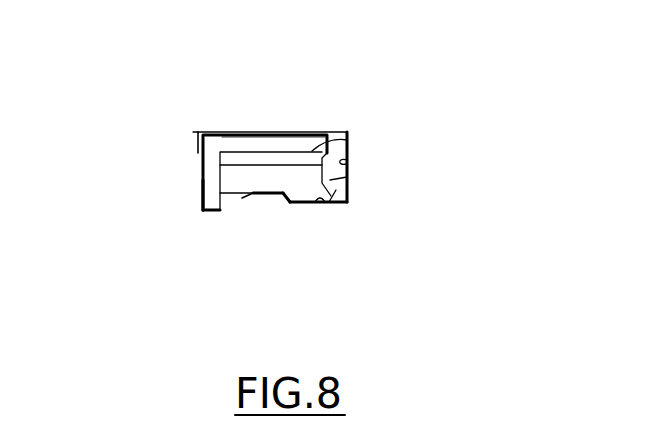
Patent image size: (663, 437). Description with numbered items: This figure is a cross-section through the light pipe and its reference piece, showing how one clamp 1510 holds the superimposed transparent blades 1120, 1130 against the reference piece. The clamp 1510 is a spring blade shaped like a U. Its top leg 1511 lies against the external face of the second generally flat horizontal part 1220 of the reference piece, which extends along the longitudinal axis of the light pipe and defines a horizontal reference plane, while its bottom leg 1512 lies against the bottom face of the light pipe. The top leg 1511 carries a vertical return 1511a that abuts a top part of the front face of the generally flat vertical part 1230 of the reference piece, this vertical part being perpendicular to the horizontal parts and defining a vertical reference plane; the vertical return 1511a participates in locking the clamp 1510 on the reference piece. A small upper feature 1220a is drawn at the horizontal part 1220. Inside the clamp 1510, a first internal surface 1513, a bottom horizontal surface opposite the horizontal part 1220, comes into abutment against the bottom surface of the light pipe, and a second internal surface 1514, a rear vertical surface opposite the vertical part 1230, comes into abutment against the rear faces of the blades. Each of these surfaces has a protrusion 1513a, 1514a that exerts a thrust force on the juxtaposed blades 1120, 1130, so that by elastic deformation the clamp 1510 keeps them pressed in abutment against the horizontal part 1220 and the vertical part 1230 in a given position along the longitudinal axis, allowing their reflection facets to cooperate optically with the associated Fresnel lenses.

The transparent blade 1120 is at (347, 140).
The transparent blade 1130 is at (345, 203).
The second generally flat horizontal part 1220 is at (277, 143).
The end portion of contact 1220a is at (222, 131).
The generally flat vertical part 1230 is at (211, 182).
The clamp 1510 is at (347, 130).
The top leg 1511 is at (258, 131).
The vertical return 1511a is at (197, 144).
The bottom leg 1512 is at (298, 203).
The first internal surface 1513 is at (347, 160).
The protrusion 1513a is at (350, 177).
The second internal surface 1514 is at (329, 203).
The protrusion 1514a is at (260, 202).